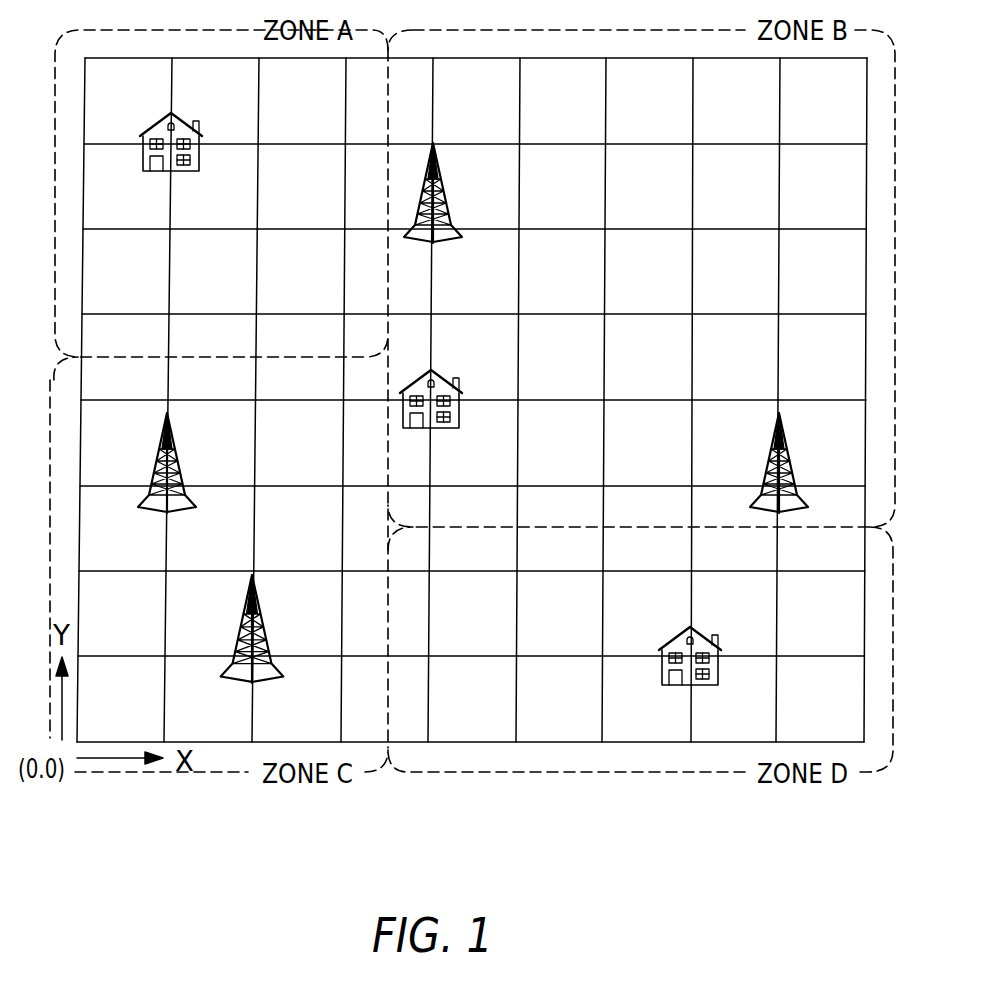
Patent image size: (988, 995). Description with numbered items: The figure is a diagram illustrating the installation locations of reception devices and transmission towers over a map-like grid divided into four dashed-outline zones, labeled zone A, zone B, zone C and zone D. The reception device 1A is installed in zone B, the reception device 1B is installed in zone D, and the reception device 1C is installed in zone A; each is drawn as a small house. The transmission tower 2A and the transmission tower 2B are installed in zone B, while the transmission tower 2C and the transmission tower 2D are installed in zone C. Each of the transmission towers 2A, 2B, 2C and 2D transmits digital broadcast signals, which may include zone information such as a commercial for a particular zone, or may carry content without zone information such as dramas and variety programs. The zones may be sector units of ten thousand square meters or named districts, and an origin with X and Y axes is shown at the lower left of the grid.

The reception device 1A is at (447, 378).
The reception device 1B is at (705, 637).
The reception device 1C is at (188, 123).
The transmission tower 2A is at (447, 208).
The transmission tower 2B is at (795, 464).
The transmission tower 2C is at (268, 636).
The transmission tower 2D is at (182, 471).